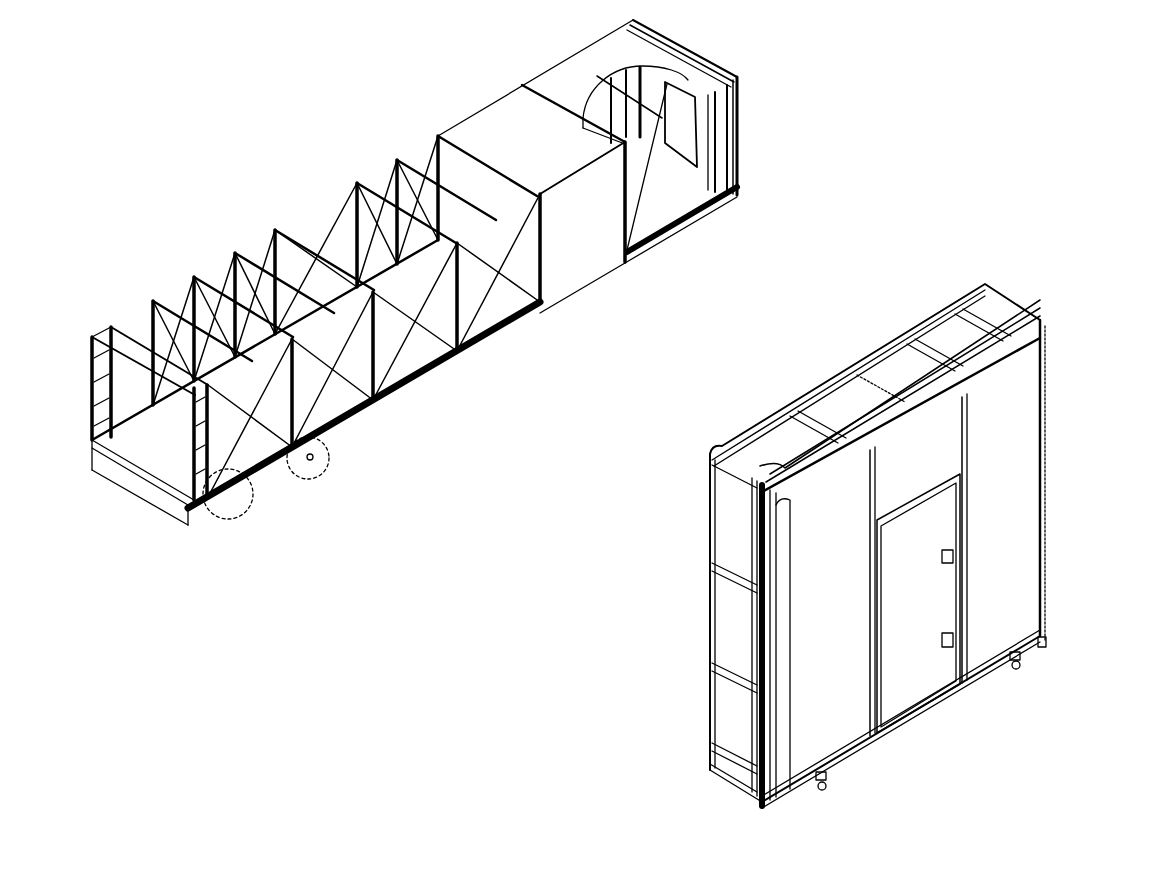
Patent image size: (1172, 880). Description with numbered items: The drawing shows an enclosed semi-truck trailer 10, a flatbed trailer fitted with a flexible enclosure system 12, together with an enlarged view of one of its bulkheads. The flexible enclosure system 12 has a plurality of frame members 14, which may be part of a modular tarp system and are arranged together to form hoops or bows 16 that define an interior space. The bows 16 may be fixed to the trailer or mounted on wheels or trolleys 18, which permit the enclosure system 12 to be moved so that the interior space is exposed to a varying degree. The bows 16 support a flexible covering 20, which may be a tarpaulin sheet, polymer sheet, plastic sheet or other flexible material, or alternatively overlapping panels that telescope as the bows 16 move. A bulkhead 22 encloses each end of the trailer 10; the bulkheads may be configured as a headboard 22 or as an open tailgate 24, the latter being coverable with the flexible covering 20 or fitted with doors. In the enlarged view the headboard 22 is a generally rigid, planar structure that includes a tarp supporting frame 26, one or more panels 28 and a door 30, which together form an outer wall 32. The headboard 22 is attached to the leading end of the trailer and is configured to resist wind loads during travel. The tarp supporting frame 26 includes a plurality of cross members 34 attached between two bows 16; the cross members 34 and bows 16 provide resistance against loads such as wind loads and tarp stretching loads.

In FIG. 1, the enclosed semi-truck trailer 10 is at (230, 141).
In FIG. 1, the flexible enclosure system 12 is at (353, 171).
In FIG. 1, the frame members 14 is at (208, 282).
In FIG. 1, the bows 16 is at (728, 182).
In FIG. 2, the bows 16 is at (952, 298).
In FIG. 1, the wheels or trolleys 18 is at (291, 450).
In FIG. 1, the flexible covering 20 is at (568, 78).
In FIG. 1, the headboard 22 is at (462, 147).
In FIG. 2, the headboard 22 is at (879, 515).
In FIG. 1, the tailgate 24 is at (80, 351).
In FIG. 2, the tarp supporting frame 26 is at (850, 451).
In FIG. 2, the panels 28 is at (890, 481).
In FIG. 2, the door 30 is at (917, 667).
In FIG. 2, the outer wall 32 is at (1090, 563).
In FIG. 2, the cross members 34 is at (915, 340).